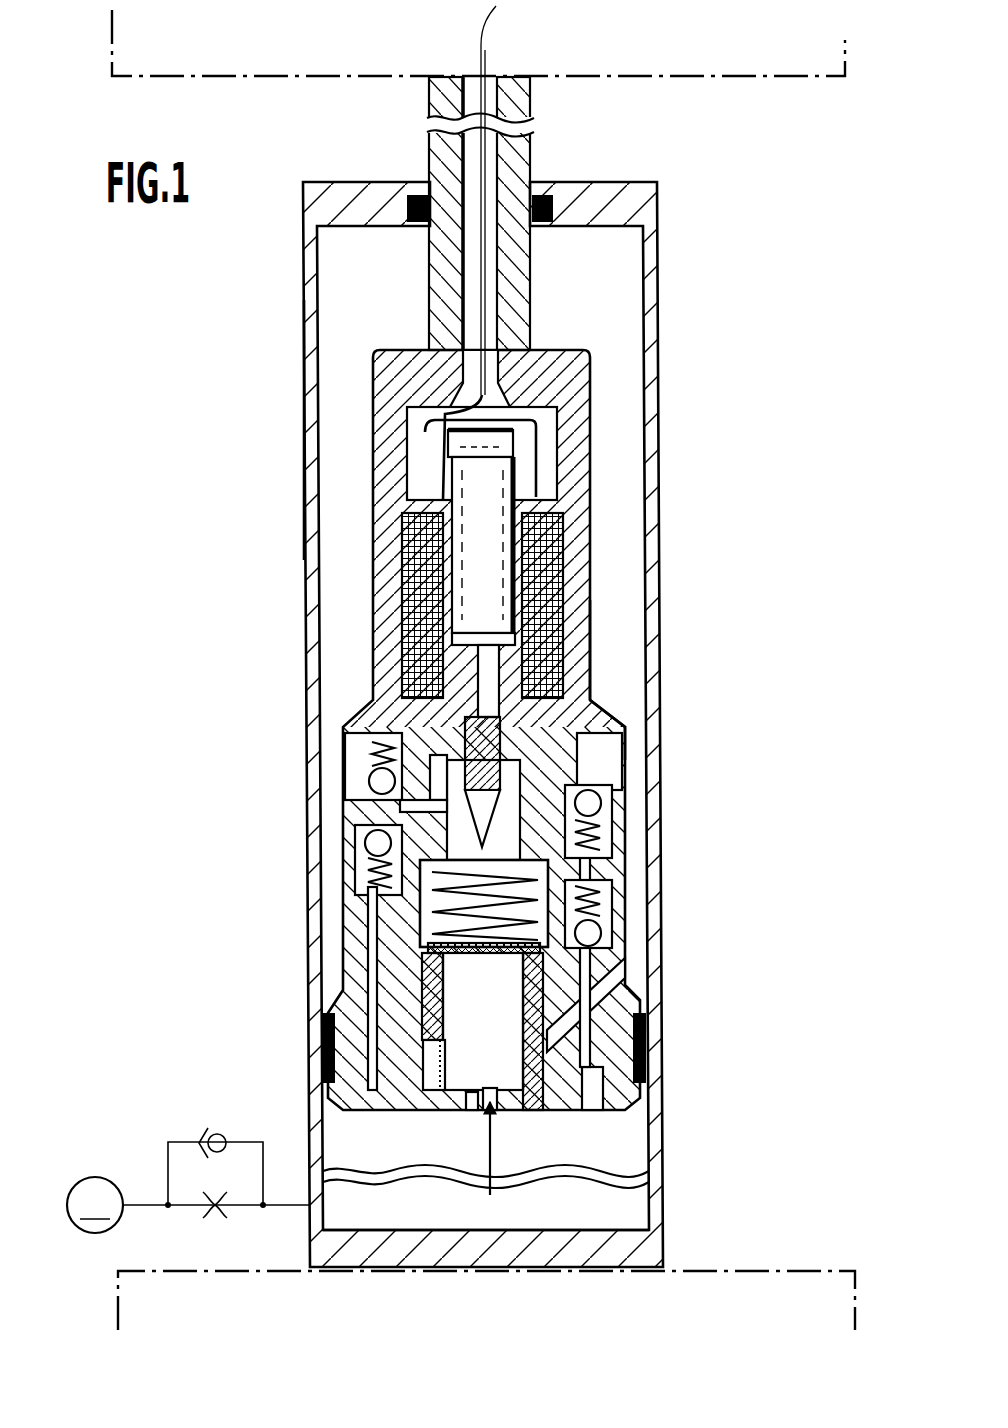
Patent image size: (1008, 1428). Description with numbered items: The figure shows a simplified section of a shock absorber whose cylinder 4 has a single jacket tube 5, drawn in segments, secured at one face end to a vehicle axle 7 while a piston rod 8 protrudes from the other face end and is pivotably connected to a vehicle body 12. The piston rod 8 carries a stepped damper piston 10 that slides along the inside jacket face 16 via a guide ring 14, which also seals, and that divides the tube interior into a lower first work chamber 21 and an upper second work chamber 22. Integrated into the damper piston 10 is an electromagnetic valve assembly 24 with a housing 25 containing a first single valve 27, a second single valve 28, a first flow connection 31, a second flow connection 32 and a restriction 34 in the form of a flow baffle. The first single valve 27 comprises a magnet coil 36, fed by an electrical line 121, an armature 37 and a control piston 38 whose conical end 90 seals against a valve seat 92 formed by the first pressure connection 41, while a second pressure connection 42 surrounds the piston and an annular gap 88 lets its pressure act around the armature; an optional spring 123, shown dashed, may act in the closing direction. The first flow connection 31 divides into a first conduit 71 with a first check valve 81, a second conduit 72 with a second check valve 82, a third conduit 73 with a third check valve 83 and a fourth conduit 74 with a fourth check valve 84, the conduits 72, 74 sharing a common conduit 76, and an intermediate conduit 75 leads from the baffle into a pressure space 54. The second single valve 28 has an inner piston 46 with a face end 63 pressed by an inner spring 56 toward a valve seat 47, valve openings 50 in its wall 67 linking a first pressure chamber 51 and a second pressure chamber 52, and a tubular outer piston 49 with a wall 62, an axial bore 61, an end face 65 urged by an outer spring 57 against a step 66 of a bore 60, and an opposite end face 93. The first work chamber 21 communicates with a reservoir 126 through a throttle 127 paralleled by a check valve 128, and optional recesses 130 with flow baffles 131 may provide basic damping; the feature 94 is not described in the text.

The cylinder 4 is at (292, 350).
The jacket tube 5 is at (304, 420).
The vehicle axle 7 is at (783, 1272).
The piston rod 8 is at (536, 126).
The damper piston 10 is at (602, 636).
The vehicle body 12 is at (783, 57).
The guide ring 14 is at (325, 1075).
The inside jacket face 16 is at (648, 331).
The first work chamber 21 is at (642, 1208).
The second work chamber 22 is at (615, 257).
The valve assembly 24 is at (632, 876).
The housing 25 is at (626, 718).
The first single valve 27 is at (369, 570).
The second single valve 28 is at (490, 1162).
The first flow connection 31 is at (350, 878).
The second flow connection 32 is at (680, 1027).
The restriction 34 is at (602, 892).
The magnet coil 36 is at (553, 548).
The armature 37 is at (483, 551).
The control piston 38 is at (503, 742).
The first pressure connection 41 is at (458, 835).
The second pressure connection 42 is at (450, 777).
The inner piston 46 is at (412, 1092).
The valve seat 47 is at (443, 1108).
The outer piston 49 is at (590, 965).
The valve openings 50 is at (443, 1010).
The first pressure chamber 51 is at (470, 1108).
The second pressure chamber 52 is at (552, 1100).
The pressure space 54 is at (372, 905).
The inner spring 56 is at (375, 940).
The outer spring 57 is at (392, 958).
The bore 60 is at (420, 1020).
The longitudinal axial bore 61 is at (360, 990).
The wall 62 is at (330, 1050).
The face end 63 is at (527, 1100).
The end face 65 is at (512, 1050).
The step 66 is at (528, 1025).
The wall 67 is at (442, 1095).
The first conduit 71 is at (600, 1097).
The second conduit 72 is at (350, 744).
The third conduit 73 is at (635, 742).
The fourth conduit 74 is at (378, 1100).
The intermediate conduit 75 is at (605, 848).
The common conduit 76 is at (400, 806).
The first one-way check valve 81 is at (602, 932).
The second one-way check valve 82 is at (368, 772).
The third one-way check valve 83 is at (602, 803).
The fourth one-way check valve 84 is at (365, 843).
The annular gap 88 is at (497, 695).
The end 90 is at (498, 825).
The valve seat 92 is at (505, 790).
The end face 93 is at (515, 965).
The channel 94 is at (622, 985).
The electrical line 121 is at (478, 42).
The spring 123 is at (513, 447).
The reservoir 126 is at (188, 1187).
The throttle 127 is at (222, 1218).
The one-way check valve 128 is at (215, 1133).
The recesses 130 is at (605, 1100).
The flow baffles 131 is at (603, 1087).